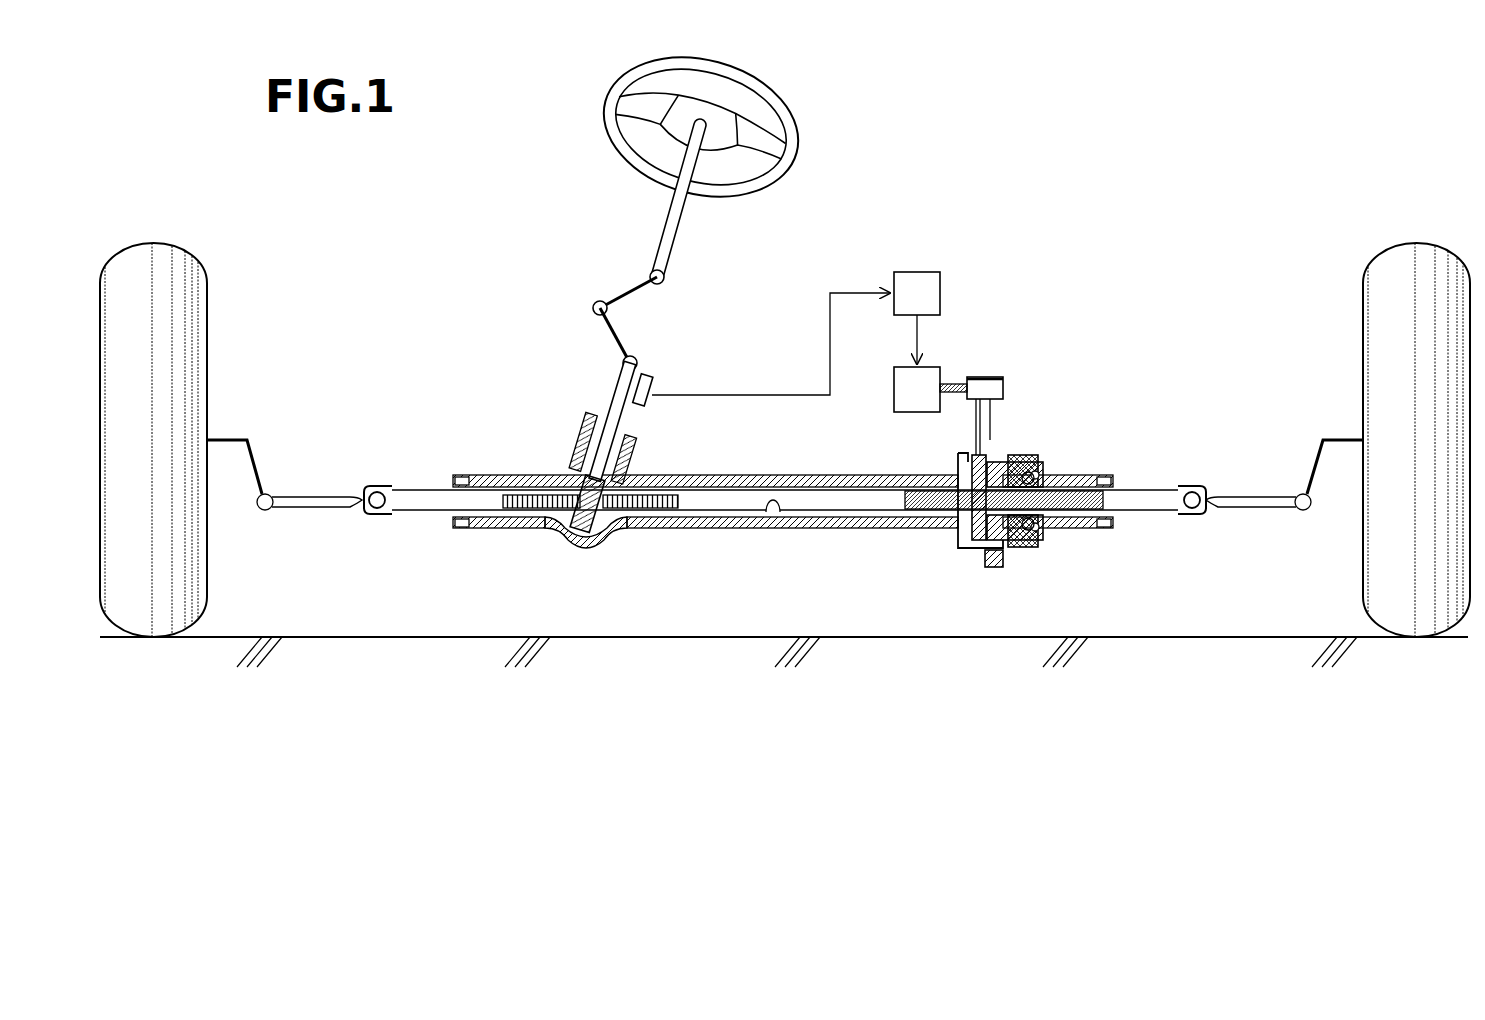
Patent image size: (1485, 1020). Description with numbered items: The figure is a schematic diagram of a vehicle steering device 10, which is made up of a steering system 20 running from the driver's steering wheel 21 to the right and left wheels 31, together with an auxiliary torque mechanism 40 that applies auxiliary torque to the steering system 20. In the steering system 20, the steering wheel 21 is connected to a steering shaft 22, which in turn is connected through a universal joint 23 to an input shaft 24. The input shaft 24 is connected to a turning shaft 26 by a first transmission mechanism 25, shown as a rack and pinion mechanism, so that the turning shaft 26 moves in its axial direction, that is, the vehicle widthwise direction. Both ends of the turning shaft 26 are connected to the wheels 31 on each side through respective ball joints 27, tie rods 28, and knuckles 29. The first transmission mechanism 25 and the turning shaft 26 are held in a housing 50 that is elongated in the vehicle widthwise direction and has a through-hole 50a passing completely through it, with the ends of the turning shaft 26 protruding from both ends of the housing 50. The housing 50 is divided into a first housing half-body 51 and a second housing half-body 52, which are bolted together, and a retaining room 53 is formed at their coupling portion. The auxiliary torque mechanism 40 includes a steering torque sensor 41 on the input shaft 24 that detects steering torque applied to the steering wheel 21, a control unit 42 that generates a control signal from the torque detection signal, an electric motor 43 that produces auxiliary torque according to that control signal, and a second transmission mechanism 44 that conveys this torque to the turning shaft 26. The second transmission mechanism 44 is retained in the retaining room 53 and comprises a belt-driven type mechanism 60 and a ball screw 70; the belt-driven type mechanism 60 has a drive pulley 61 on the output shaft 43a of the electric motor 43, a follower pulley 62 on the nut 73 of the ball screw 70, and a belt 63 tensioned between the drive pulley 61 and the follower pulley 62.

The vehicle steering device 10 is at (867, 46).
The steering system 20 is at (815, 157).
The steering wheel 21 is at (611, 96).
The steering shaft 22 is at (671, 218).
The universal joint 23 is at (593, 308).
The input shaft 24 is at (619, 393).
The first transmission mechanism 25 is at (583, 500).
The turning shaft 26 is at (430, 500).
The ball joint 27 is at (378, 491).
The tie rod 28 is at (316, 495).
The knuckle 29 is at (232, 438).
The wheel 31 is at (165, 295).
The auxiliary torque mechanism 40 is at (1007, 210).
The steering torque sensor 41 is at (653, 388).
The control unit 42 is at (916, 284).
The electric motor 43 is at (899, 398).
The output shaft 43a is at (954, 389).
The second transmission mechanism 44 is at (985, 352).
The housing 50 is at (785, 622).
The through-hole 50a is at (773, 513).
The first housing half-body 51 is at (880, 533).
The second housing half-body 52 is at (1072, 530).
The retaining room 53 is at (999, 562).
The belt-driven type mechanism 60 is at (1050, 423).
The drive pulley 61 is at (988, 403).
The follower pulley 62 is at (1018, 465).
The belt 63 is at (986, 433).
The ball screw 70 is at (1038, 457).
The nut 73 is at (1024, 541).